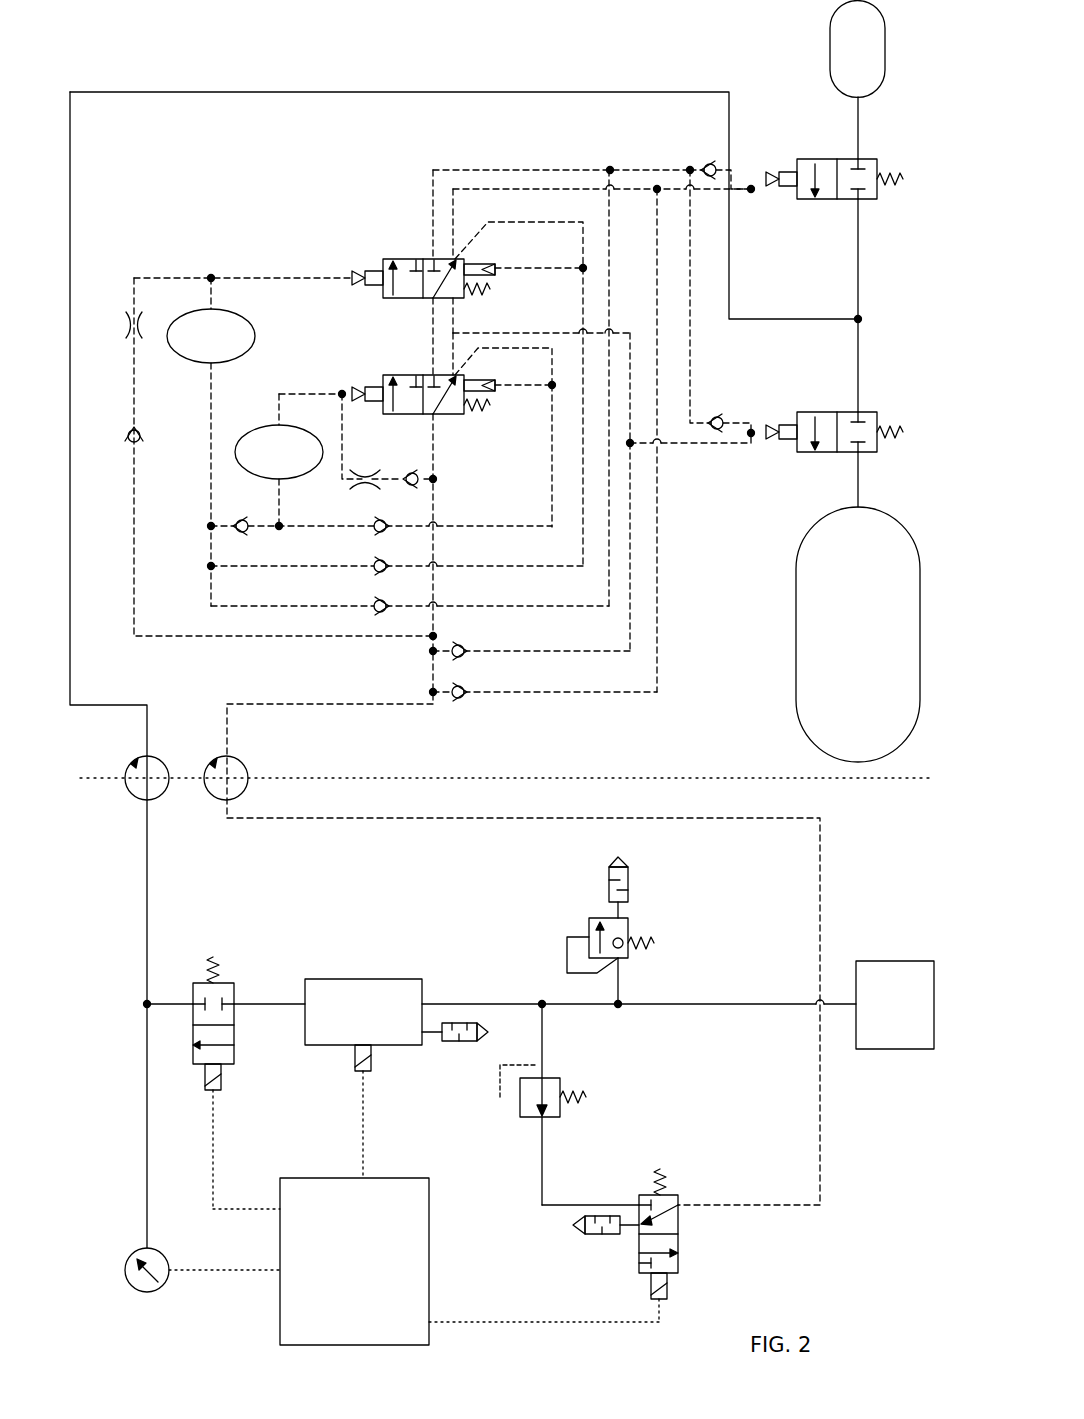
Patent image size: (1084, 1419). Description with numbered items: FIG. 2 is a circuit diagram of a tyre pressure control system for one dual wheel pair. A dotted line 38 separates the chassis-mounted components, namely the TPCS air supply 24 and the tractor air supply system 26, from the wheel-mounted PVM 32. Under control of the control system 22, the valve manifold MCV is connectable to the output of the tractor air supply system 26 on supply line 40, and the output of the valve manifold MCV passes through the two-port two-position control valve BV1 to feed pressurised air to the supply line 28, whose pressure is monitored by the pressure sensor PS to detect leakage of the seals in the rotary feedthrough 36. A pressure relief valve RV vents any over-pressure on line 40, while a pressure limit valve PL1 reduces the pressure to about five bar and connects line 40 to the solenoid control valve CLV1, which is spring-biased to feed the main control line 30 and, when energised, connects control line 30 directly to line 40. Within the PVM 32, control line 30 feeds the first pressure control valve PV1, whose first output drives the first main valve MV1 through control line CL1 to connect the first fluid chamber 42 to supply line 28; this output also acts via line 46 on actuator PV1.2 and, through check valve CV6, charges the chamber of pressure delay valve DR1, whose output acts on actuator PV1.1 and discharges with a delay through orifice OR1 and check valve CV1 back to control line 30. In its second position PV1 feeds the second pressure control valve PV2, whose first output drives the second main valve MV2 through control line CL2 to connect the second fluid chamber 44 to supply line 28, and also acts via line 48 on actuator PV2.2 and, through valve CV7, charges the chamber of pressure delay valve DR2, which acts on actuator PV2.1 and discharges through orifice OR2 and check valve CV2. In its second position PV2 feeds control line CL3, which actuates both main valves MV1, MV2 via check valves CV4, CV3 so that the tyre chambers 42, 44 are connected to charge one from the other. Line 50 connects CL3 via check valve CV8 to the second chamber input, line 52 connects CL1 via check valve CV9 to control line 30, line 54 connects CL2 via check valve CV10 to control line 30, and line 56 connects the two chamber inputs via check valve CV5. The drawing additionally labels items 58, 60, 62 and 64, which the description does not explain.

The control system 22 is at (420, 1280).
The TPCS air supply 24 is at (376, 921).
The tractor air supply system 26 is at (870, 985).
The supply line 28 is at (186, 92).
The main control line 30 is at (433, 478).
The PVM 32 is at (253, 176).
The rotary feedthrough 36 is at (212, 800).
The dotted line 38 is at (845, 782).
The supply line 40 is at (722, 1006).
The first fluid chamber 42 is at (835, 570).
The second fluid chamber 44 is at (840, 70).
The line 46 is at (553, 490).
The line 48 is at (510, 224).
The line 50 is at (612, 240).
The line 52 is at (630, 485).
The line 54 is at (657, 620).
The line 56 is at (295, 535).
The line 58 is at (304, 390).
The spring 60 is at (484, 408).
The line 62 is at (240, 276).
The spring 64 is at (493, 290).
The two-port two-position control valve BV1 is at (230, 986).
The valve manifold MCV is at (372, 989).
The pressure relief valve RV is at (630, 918).
The pressure limit valve PL1 is at (565, 1092).
The three-port two-position solenoid control valve CLV1 is at (670, 1198).
The pressure sensor PS is at (130, 1255).
The first main valve MV1 is at (833, 413).
The second main valve MV2 is at (833, 160).
The first three-port two-position pressure control valve PV1 is at (423, 374).
The second pressure control valve PV2 is at (423, 258).
The pressure actuator PV1.1 is at (356, 389).
The pressure actuator PV1.2 is at (486, 388).
The pressure actuator PV2.1 is at (356, 272).
The actuator PV2.2 is at (484, 270).
The control line CL1 is at (545, 334).
The control line CL2 is at (528, 196).
The third PVM control line CL3 is at (490, 172).
The check valve CV1 is at (408, 476).
The check valve CV2 is at (130, 448).
The check valve CV3 is at (706, 165).
The check valve CV4 is at (715, 416).
The check valve CV5 is at (240, 520).
The check valve CV6 is at (374, 520).
The control valve CV7 is at (374, 560).
The check valve CV8 is at (374, 600).
The check valve CV9 is at (464, 651).
The check valve CV10 is at (464, 698).
The flow restriction orifice OR1 is at (365, 468).
The flow restriction orifice OR2 is at (125, 327).
The pressure delay valve DR1 is at (255, 440).
The second pressure delay valve DR2 is at (245, 345).